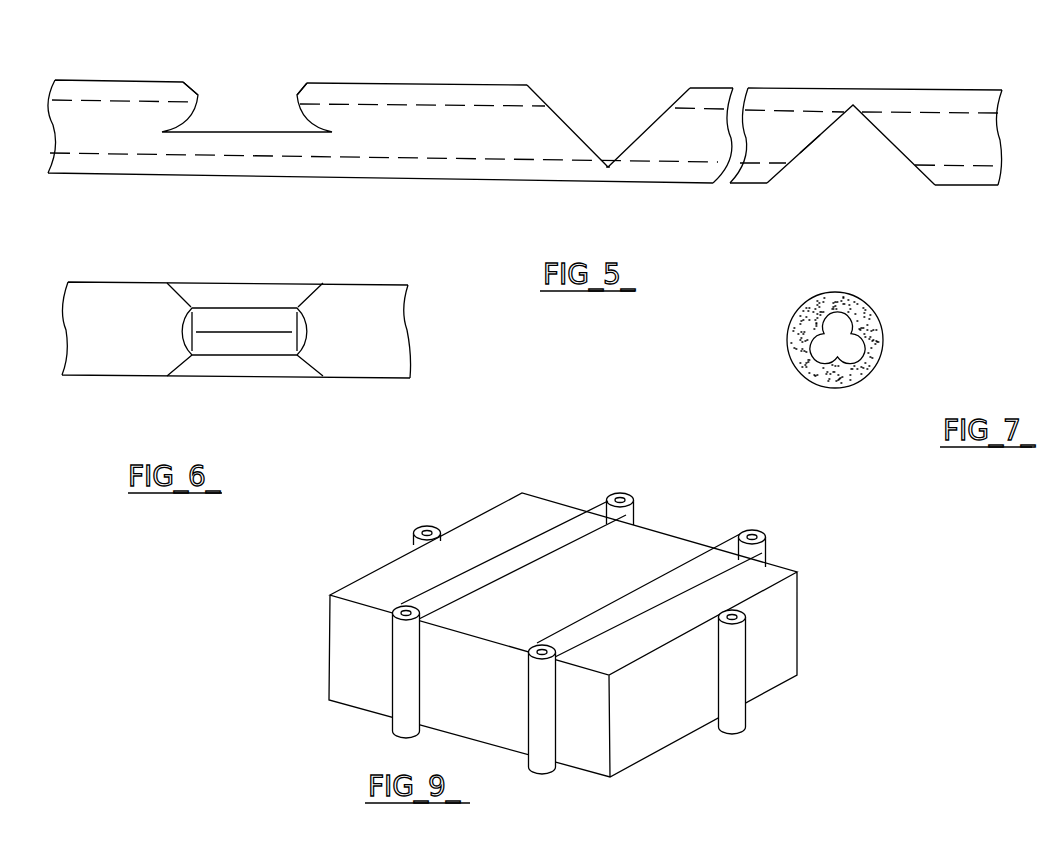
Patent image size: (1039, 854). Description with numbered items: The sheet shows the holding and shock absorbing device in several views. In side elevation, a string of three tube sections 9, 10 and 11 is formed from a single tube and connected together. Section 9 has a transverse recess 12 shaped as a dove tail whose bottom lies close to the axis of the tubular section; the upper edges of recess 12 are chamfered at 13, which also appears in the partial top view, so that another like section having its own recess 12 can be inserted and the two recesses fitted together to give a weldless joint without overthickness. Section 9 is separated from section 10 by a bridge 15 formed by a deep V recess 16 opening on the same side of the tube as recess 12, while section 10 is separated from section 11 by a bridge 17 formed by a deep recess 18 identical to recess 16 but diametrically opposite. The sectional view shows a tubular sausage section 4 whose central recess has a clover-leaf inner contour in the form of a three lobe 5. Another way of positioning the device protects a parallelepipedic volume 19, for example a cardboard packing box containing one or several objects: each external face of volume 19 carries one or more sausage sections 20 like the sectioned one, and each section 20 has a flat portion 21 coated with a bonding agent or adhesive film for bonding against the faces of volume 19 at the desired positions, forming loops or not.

In FIG. 7, the tubular sausage section 4 is at (885, 328).
In FIG. 6, the three lobe 5 is at (236, 320).
In FIG. 7, the three lobe 5 is at (852, 317).
In FIG. 5, the section 9 is at (362, 179).
In FIG. 6, the section 9 is at (110, 378).
In FIG. 5, the section 10 is at (743, 186).
In FIG. 5, the section 11 is at (972, 189).
In FIG. 5, the transverse recess 12 is at (222, 113).
In FIG. 6, the transverse recess 12 is at (248, 368).
In FIG. 5, the chamfers 13 is at (186, 81).
In FIG. 6, the chamfers 13 is at (188, 328).
In FIG. 5, the bridge 15 is at (605, 174).
In FIG. 5, the deep V recess 16 is at (612, 133).
In FIG. 5, the bridge 17 is at (853, 99).
In FIG. 5, the deep recess 18 is at (845, 131).
In FIG. 9, the parallelepipedic volume 19 is at (800, 591).
In FIG. 9, the sausage sections 20 is at (549, 531).
In FIG. 9, the flat portion 21 is at (544, 645).